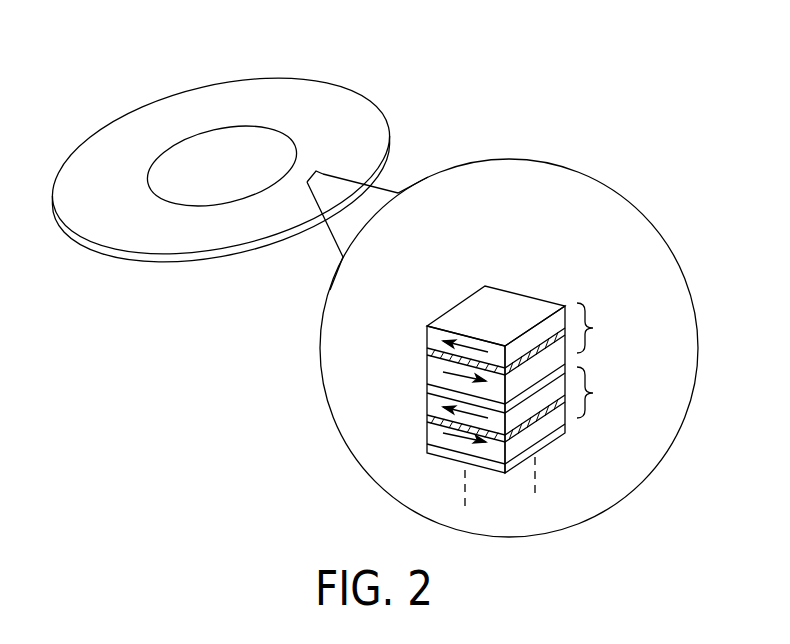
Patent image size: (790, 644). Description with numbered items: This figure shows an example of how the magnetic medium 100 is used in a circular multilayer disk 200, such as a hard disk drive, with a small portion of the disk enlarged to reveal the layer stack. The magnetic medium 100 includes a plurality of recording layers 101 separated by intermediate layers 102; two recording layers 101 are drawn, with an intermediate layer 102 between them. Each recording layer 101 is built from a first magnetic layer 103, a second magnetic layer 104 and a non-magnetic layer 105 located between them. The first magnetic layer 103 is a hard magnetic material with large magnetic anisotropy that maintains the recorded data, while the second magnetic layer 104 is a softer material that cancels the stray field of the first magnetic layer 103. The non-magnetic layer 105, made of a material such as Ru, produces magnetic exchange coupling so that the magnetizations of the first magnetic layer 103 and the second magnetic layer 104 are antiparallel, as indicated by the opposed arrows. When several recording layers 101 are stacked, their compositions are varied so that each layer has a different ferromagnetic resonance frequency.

The circular multilayer disk 200 is at (300, 90).
The magnetic medium 100 is at (515, 360).
The recording layer 101 is at (529, 383).
The intermediate layer 102 is at (565, 362).
The first magnetic layer 103 is at (431, 368).
The second magnetic layer 104 is at (432, 338).
The non-magnetic layer 105 is at (431, 353).